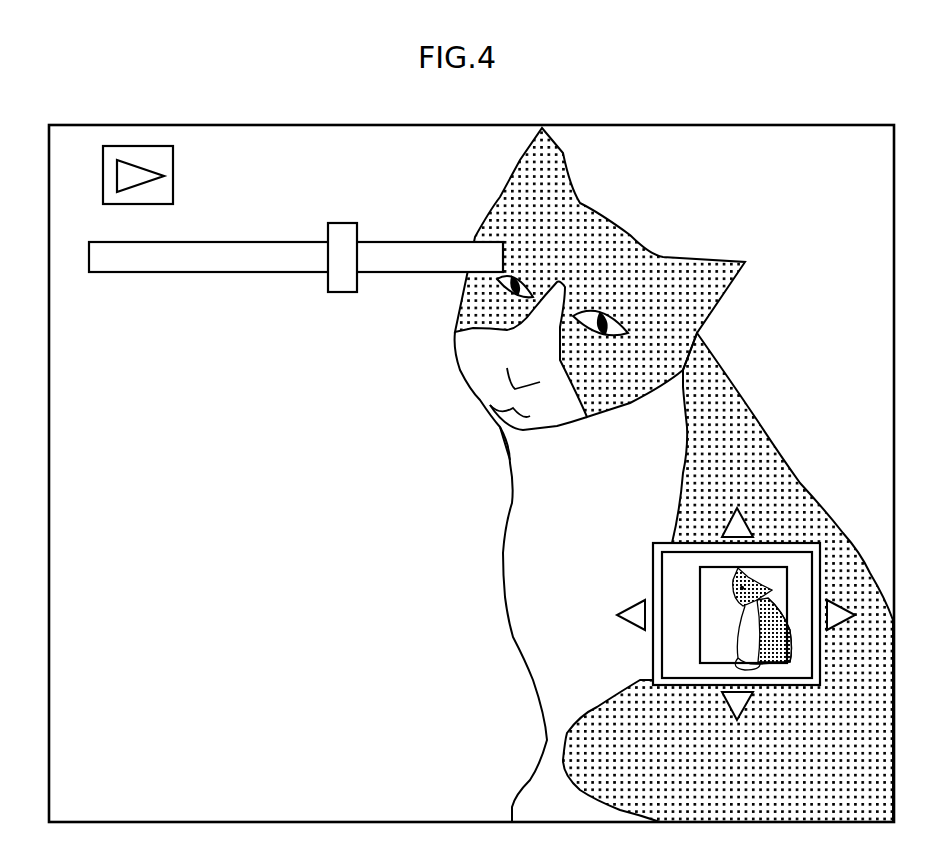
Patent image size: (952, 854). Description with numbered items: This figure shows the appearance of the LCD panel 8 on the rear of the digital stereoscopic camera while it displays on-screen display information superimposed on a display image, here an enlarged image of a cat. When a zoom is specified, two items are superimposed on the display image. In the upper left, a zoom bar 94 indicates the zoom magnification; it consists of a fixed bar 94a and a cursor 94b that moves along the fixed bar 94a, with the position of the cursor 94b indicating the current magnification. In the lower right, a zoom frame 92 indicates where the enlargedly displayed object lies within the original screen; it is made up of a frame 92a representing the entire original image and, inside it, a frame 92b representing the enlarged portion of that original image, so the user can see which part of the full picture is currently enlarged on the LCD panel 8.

The LCD panel 8 is at (894, 323).
The zoom bar 94 is at (296, 313).
The fixed bar 94a is at (253, 273).
The cursor 94b is at (332, 293).
The zoom frame 92 is at (625, 614).
The frame indicating the entire original image 92a is at (656, 575).
The frame indicating the enlarged portion 92b is at (696, 642).